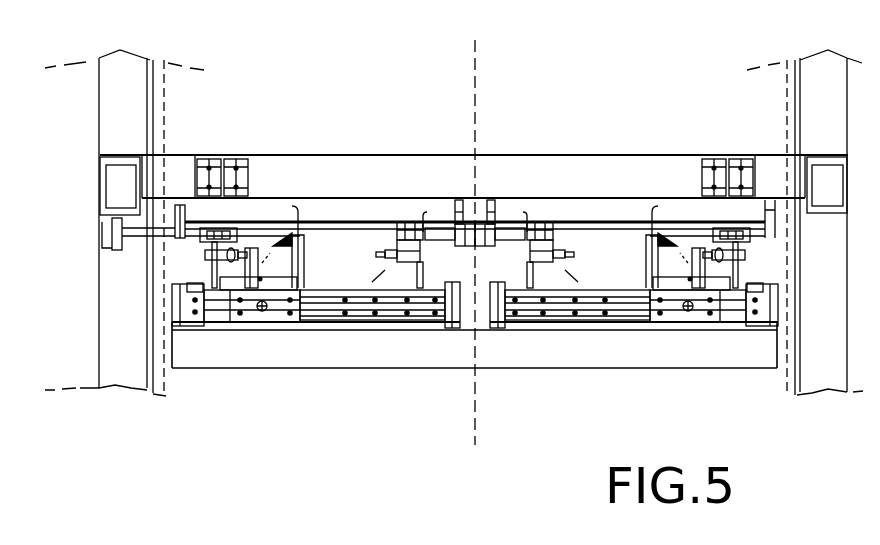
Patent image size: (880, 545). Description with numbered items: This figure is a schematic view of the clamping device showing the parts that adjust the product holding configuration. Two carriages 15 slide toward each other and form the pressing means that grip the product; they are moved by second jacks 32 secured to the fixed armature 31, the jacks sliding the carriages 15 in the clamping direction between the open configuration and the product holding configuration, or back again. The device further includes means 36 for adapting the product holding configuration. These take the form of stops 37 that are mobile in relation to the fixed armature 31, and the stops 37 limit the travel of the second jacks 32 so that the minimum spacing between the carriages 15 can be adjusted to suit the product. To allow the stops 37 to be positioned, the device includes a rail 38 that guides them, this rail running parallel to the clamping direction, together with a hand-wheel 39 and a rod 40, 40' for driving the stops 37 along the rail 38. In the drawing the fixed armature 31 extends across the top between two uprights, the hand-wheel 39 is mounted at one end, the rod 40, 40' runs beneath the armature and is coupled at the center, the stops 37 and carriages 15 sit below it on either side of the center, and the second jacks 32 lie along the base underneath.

The carriages 15 is at (322, 236).
The fixed armature 31 is at (283, 178).
The second jacks 32 is at (333, 312).
The means for adapting the product holding configuration 36 is at (372, 222).
The stops 37 is at (384, 256).
The rail 38 is at (683, 228).
The hand-wheel 39 is at (112, 236).
The rod 40 is at (449, 178).
The rod 40' is at (506, 178).